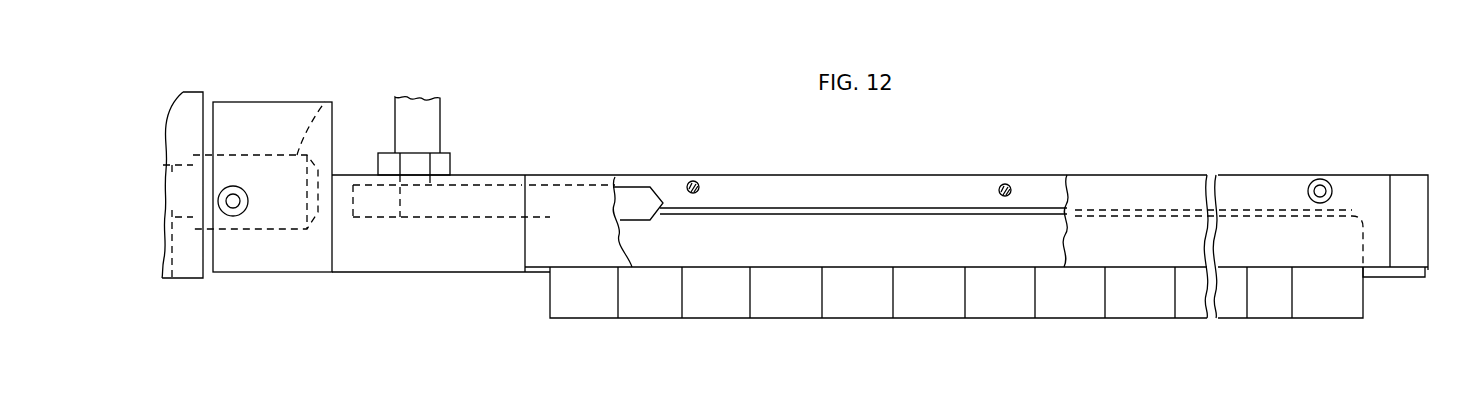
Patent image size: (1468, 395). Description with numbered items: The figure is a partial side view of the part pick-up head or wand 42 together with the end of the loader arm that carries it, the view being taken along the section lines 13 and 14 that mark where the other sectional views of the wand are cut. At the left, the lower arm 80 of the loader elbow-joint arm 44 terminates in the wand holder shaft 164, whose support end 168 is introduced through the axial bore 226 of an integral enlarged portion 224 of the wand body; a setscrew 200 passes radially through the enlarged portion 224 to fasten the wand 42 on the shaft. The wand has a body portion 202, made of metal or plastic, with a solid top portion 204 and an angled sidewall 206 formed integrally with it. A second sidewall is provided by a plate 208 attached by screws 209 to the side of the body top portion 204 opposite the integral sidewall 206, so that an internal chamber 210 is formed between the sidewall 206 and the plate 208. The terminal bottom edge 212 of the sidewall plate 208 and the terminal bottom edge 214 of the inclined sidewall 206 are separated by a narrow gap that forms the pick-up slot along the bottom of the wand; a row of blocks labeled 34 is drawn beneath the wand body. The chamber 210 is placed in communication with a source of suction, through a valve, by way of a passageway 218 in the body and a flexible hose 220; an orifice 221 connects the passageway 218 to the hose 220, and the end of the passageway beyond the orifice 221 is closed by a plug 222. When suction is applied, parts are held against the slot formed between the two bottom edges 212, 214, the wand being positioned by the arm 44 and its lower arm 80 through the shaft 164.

The section line 13- 13 is at (1110, 357).
The section line 14- 14 is at (657, 367).
The support block 34 is at (1272, 310).
The part pick-up head or wand 42 is at (1337, 177).
The loader elbow-joint arm 44 is at (187, 91).
The lower arm 80 is at (218, 73).
The wand holder shaft 164 is at (173, 279).
The support end 168 is at (248, 157).
The setscrew 200 is at (243, 215).
The body portion 202 is at (927, 153).
The top portion 204 is at (950, 192).
The angled sidewall 206 is at (1012, 232).
The plate 208 is at (1242, 237).
The screws 209 is at (700, 182).
The internal chamber 210 is at (943, 251).
The terminal bottom edge of the sidewall plate 212 is at (721, 273).
The terminal bottom edge of the inclined sidewall 214 is at (540, 270).
The passageway 218 is at (638, 197).
The flexible hose 220 is at (435, 120).
The orifice 221 is at (417, 178).
The plug 222 is at (358, 195).
The enlarged portion 224 is at (293, 102).
The axial bore 226 is at (330, 101).